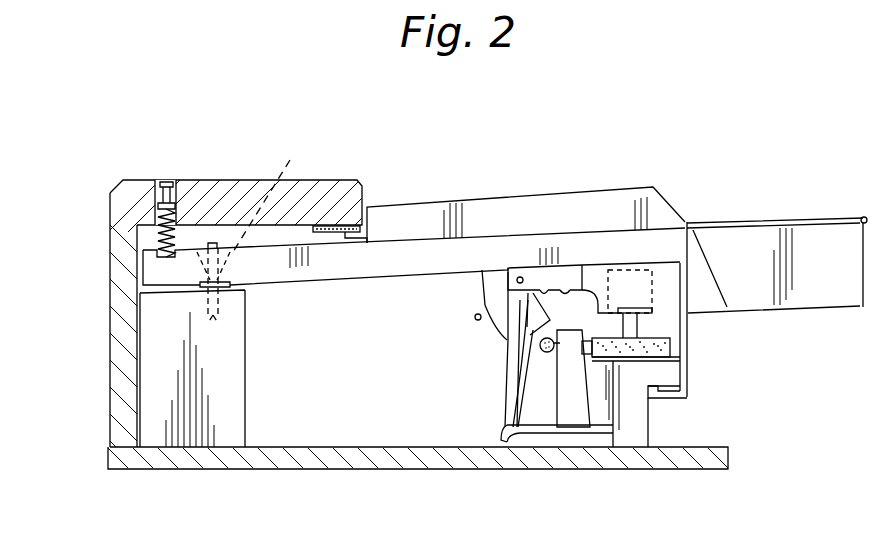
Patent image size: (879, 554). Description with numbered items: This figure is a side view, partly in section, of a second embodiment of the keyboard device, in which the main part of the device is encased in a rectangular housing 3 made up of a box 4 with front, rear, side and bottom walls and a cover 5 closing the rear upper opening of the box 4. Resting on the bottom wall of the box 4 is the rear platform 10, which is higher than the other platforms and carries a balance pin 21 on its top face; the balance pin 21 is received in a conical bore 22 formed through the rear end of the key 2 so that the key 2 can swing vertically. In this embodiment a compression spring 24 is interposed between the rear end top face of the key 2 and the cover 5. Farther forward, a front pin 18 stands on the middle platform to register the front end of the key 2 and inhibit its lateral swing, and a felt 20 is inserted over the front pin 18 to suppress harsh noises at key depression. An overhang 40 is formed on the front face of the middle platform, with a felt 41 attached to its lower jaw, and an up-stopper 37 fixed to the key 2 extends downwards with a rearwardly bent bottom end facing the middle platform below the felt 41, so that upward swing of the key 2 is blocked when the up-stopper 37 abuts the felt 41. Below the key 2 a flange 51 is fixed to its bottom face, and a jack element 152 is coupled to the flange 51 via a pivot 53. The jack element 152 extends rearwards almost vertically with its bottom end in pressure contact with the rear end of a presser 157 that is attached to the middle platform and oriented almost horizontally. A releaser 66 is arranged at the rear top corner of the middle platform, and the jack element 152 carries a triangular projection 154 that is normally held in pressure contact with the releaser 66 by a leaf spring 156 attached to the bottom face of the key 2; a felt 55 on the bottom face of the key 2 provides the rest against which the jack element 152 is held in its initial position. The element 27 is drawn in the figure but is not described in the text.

The key 2 is at (628, 218).
The housing 3 is at (230, 475).
The box 4 is at (728, 455).
The cover 5 is at (248, 181).
The rear platform 10 is at (247, 380).
The front pin 18 is at (623, 307).
The felt 20 is at (662, 346).
The balance pin 21 is at (213, 243).
The conical bore 22 is at (269, 191).
The compression spring 24 is at (163, 238).
The pad 27 is at (332, 233).
The up-stopper 37 is at (695, 389).
The overhang 40 is at (665, 371).
The felt 41 is at (653, 395).
The flange 51 is at (565, 273).
The pivot 53 is at (518, 277).
The felt 55 is at (527, 310).
The releaser 66 is at (548, 352).
The jack element 152 is at (505, 375).
The triangular projection 154 is at (512, 403).
The leaf spring 156 is at (495, 327).
The presser 157 is at (562, 434).